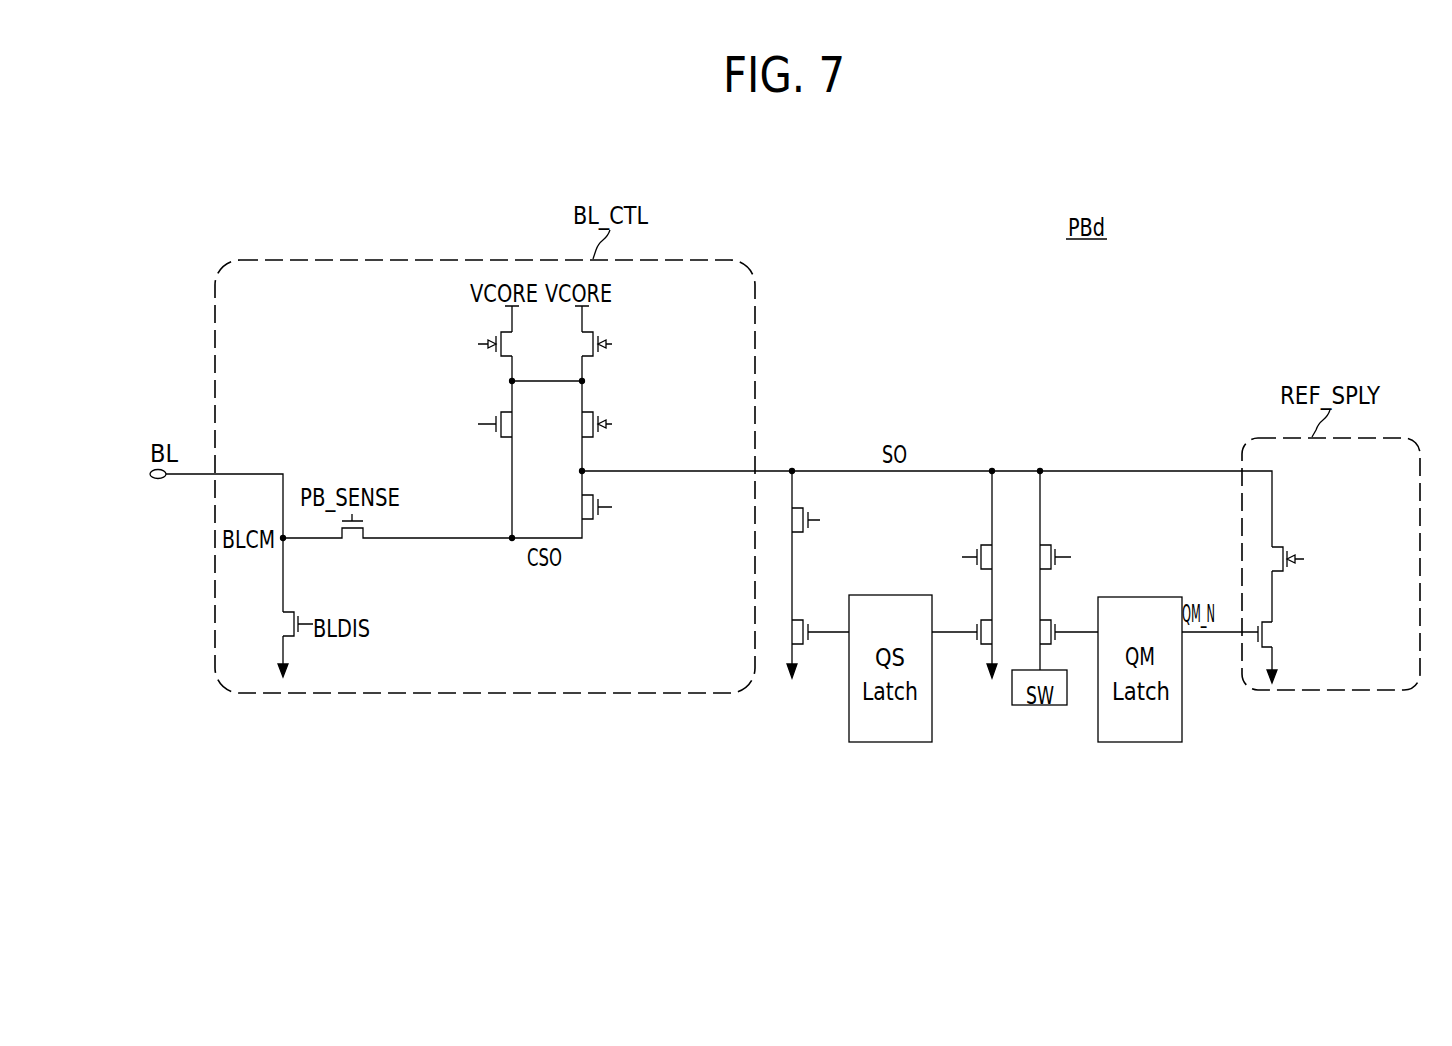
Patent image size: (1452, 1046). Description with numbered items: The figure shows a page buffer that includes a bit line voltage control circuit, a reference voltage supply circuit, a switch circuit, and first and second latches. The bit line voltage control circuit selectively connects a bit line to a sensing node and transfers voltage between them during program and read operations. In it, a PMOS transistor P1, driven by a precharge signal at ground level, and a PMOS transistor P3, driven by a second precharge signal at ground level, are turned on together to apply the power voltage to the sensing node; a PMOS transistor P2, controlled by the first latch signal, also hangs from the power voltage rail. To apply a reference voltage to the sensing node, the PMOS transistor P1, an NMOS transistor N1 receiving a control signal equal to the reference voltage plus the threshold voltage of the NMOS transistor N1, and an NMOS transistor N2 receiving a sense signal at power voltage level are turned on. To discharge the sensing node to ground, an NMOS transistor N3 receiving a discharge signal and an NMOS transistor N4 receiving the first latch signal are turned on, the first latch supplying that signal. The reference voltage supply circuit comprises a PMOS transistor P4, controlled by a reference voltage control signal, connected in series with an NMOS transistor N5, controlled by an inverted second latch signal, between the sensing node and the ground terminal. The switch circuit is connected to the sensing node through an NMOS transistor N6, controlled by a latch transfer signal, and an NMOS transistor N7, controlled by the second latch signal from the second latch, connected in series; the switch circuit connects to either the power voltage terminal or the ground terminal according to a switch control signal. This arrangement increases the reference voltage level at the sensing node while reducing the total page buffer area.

The PMOS transistor P1 is at (451, 346).
The PMOS transistor P2 is at (597, 346).
The PMOS transistor P3 is at (650, 427).
The PMOS transistor P4 is at (1328, 561).
The NMOS transistor N1 is at (460, 427).
The NMOS transistor N2 is at (633, 509).
The NMOS transistor N3 is at (843, 522).
The NMOS transistor N4 is at (807, 623).
The NMOS transistor N5 is at (1280, 636).
The NMOS transistor N6 is at (1016, 559).
The NMOS transistor N7 is at (1037, 624).